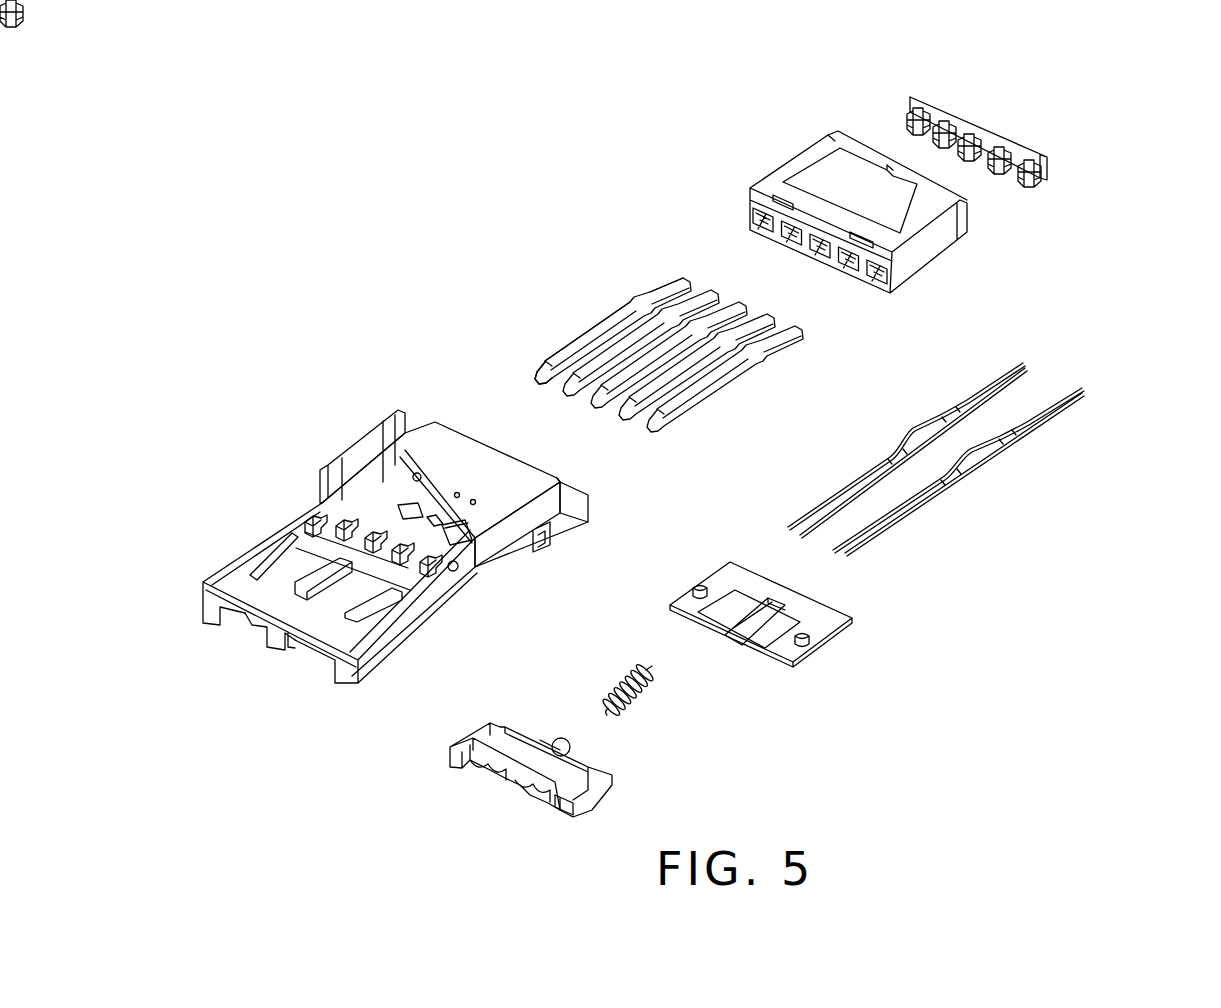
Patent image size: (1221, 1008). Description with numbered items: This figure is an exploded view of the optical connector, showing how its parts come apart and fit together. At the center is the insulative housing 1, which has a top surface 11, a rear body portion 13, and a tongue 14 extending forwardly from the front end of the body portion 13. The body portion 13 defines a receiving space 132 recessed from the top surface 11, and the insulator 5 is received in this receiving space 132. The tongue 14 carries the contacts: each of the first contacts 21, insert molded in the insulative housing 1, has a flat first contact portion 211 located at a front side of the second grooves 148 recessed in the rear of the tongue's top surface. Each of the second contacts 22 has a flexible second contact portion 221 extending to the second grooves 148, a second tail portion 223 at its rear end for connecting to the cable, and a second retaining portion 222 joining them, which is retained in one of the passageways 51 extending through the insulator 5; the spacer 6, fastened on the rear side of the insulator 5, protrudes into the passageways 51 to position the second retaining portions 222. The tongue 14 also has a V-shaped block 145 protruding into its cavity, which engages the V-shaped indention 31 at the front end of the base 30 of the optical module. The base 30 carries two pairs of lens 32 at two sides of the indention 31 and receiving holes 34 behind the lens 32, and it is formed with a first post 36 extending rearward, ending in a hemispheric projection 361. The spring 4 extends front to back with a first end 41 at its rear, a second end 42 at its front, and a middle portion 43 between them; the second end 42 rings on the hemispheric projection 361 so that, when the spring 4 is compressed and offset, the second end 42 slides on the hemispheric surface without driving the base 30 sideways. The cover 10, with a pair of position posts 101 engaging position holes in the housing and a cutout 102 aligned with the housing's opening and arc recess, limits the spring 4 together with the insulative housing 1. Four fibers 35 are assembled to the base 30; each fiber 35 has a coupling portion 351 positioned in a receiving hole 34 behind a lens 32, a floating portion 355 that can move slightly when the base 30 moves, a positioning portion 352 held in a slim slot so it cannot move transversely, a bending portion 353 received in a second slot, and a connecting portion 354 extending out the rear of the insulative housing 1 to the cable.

The insulative housing 1 is at (355, 477).
The top surface 11 is at (563, 482).
The body portion 13 is at (508, 542).
The receiving space 132 is at (387, 428).
The tongue 14 is at (238, 562).
The V-shaped block 145 is at (275, 638).
The second grooves 148 is at (452, 571).
The first contacts 21 is at (327, 637).
The first contact portion 211 is at (283, 562).
The second contacts 22 is at (592, 305).
The second contact portion 221 is at (540, 362).
The second retaining portion 222 is at (623, 317).
The second tail portion 223 is at (671, 287).
The insulator 5 is at (765, 150).
The passageways 51 is at (817, 258).
The spacer 6 is at (903, 85).
The fibers 35 is at (980, 484).
The coupling portion 351 is at (847, 550).
The positioning portion 352 is at (937, 493).
The bending portion 353 is at (1000, 462).
The connecting portion 354 is at (1073, 415).
The floating portion 355 is at (890, 528).
The cover 10 is at (683, 572).
The position posts 101 is at (805, 653).
The cutout 102 is at (742, 627).
The spring 4 is at (629, 706).
The first end 41 is at (650, 677).
The second end 42 is at (612, 707).
The middle portion 43 is at (632, 702).
The base 30 is at (493, 767).
The V-shaped indention 31 is at (515, 788).
The lens 32 is at (527, 798).
The receiving holes 34 is at (557, 807).
The first post 36 is at (550, 742).
The hemispheric projection 361 is at (567, 732).